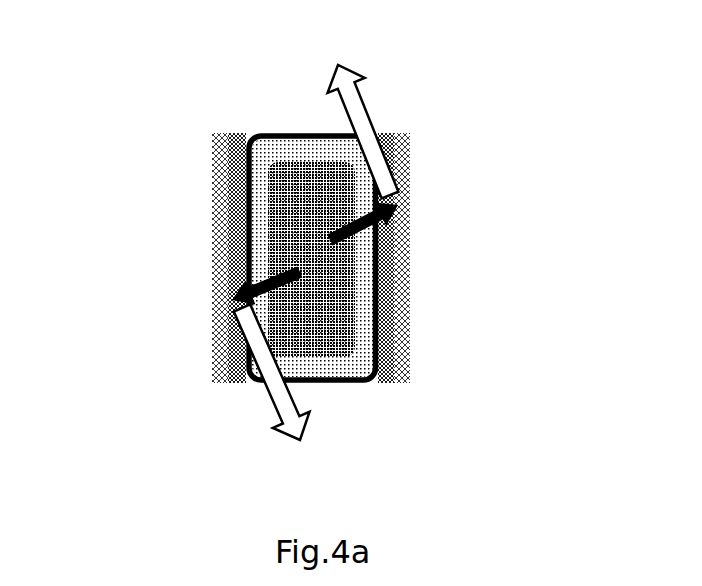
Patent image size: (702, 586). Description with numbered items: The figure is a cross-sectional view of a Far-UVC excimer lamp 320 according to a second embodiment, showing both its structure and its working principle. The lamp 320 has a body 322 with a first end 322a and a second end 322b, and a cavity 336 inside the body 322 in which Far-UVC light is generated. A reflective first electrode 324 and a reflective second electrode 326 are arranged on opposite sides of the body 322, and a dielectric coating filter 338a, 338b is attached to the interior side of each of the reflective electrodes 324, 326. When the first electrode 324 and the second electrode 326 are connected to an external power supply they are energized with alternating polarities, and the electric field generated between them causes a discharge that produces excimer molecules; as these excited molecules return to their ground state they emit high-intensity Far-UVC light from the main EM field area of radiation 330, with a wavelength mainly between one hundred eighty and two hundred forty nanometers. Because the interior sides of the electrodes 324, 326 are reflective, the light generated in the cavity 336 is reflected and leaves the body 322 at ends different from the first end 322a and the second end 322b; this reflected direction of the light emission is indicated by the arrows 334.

The Far-UVC excimer lamp 320 is at (316, 253).
The body 322 is at (250, 147).
The first end 322a is at (243, 197).
The second end 322b is at (410, 239).
The first electrode 324 is at (228, 263).
The second electrode 326 is at (403, 280).
The main EM field area of radiation 330 is at (290, 183).
The arrows 334 is at (381, 190).
The cavity 336 is at (306, 128).
The dielectric coating filter 338a is at (243, 231).
The dielectric coating filter 338b is at (395, 333).